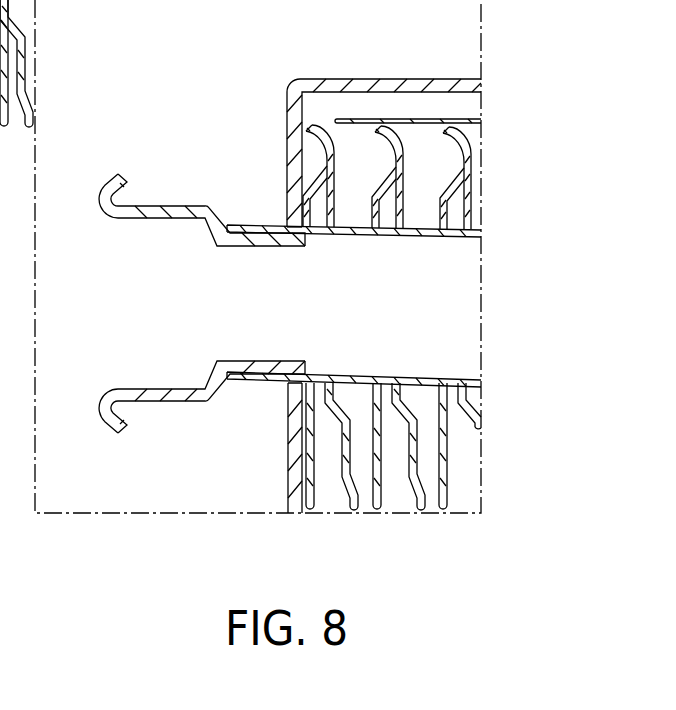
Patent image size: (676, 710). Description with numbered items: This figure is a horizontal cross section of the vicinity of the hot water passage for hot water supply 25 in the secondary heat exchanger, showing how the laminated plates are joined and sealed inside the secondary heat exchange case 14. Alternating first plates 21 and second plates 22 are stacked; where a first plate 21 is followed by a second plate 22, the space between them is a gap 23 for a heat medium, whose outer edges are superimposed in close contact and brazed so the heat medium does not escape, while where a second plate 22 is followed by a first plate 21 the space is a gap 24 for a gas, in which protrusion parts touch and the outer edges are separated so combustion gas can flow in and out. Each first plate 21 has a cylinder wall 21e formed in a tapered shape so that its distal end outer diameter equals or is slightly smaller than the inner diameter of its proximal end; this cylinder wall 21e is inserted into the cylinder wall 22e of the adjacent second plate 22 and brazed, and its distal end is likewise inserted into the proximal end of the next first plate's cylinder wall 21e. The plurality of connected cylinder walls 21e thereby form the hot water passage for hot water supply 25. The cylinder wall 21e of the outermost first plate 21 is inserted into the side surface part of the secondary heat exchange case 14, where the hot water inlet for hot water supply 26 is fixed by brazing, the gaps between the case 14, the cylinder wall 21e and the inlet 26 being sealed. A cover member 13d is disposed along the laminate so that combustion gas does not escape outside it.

The secondary heat exchange case 14 is at (318, 79).
The cover member 13d is at (470, 106).
The hot water inlet for hot water supply 26 is at (157, 207).
The hot water passage for hot water supply 25 is at (441, 278).
The first plate 21 is at (311, 509).
The second plate 22 is at (357, 509).
The cylinder wall 21e is at (268, 221).
The cylinder wall 22e is at (303, 227).
The gap for a heat medium 23 is at (332, 467).
The gap for a gas 24 is at (366, 467).